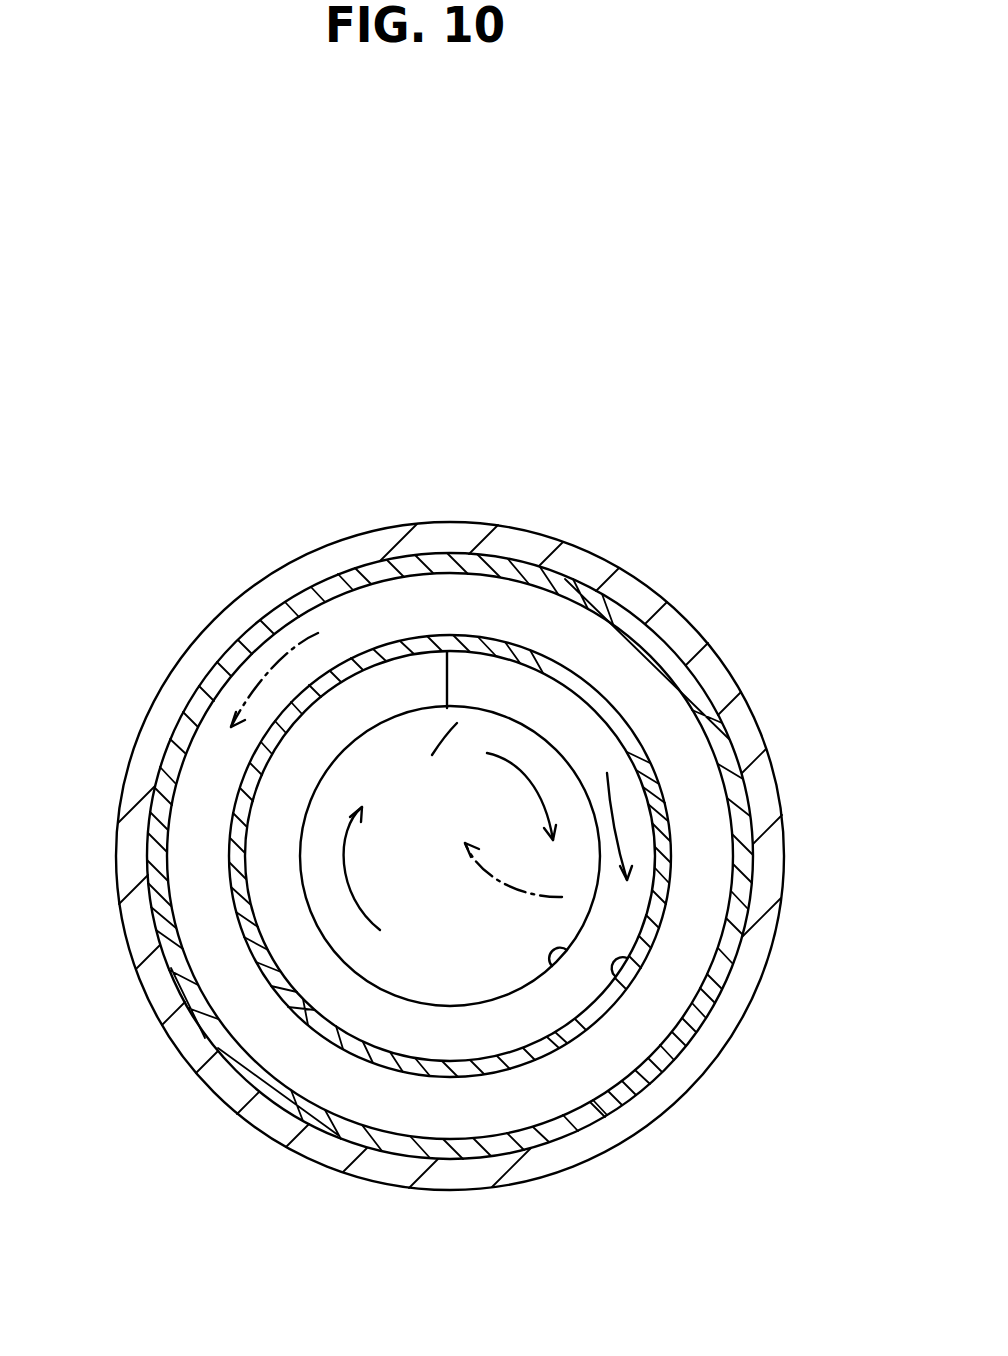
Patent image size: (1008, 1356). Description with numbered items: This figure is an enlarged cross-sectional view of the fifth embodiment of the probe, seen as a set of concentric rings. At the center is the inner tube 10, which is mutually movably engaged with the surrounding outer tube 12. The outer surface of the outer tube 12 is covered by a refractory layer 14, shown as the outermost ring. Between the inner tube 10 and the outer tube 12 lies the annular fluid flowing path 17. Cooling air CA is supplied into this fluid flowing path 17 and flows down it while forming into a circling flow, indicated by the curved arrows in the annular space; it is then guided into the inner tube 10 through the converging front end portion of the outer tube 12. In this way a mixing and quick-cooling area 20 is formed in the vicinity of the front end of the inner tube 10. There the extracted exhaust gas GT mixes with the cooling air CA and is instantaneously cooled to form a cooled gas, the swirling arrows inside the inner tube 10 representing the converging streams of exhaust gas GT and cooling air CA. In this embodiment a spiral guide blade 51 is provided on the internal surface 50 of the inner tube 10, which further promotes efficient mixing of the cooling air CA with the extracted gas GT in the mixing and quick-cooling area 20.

The inner tube 10 is at (655, 765).
The outer tube 12 is at (618, 610).
The refractory layer 14 is at (755, 985).
The fluid flowing path 17 is at (706, 878).
The mixing and quick-cooling area 20 is at (490, 912).
The internal surface 50 is at (614, 962).
The spiral guide blade 51 is at (548, 948).
The extracted exhaust gas GT is at (518, 763).
The cooling air CA is at (433, 811).